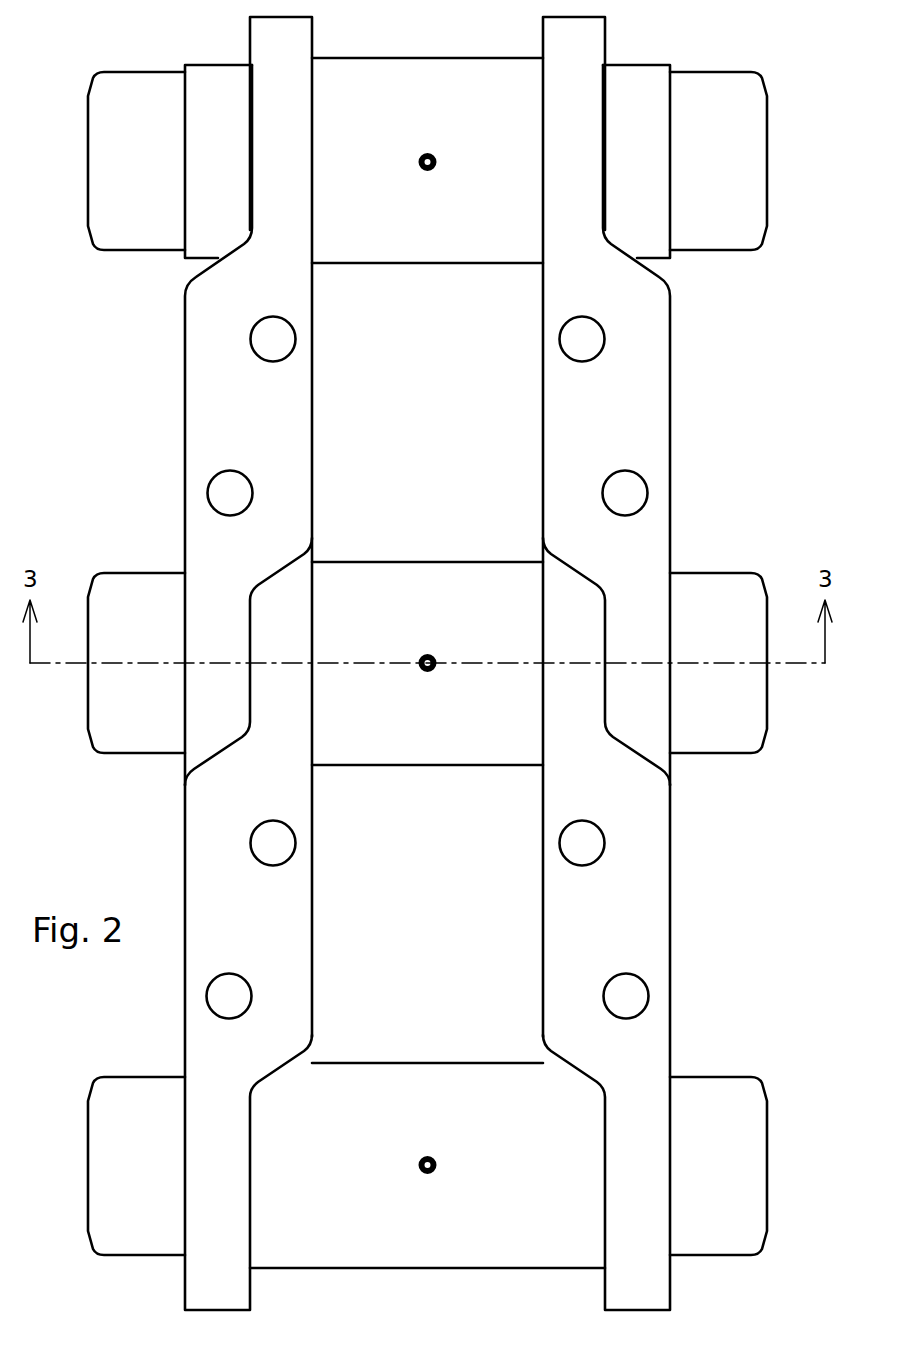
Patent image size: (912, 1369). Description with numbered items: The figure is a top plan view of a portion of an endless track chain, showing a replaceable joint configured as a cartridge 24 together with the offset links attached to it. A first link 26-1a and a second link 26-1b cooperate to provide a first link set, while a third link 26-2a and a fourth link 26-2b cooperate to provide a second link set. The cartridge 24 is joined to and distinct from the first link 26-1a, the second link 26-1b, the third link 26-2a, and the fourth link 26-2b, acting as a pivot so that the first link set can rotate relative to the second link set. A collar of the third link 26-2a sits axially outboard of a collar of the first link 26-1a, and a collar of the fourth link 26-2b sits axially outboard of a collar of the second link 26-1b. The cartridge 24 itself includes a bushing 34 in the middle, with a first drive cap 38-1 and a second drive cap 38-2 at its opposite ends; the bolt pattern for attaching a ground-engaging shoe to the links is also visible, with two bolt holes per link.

The cartridge 24 is at (747, 813).
The first link 26-1a is at (288, 921).
The second link 26-1b is at (582, 932).
The third link 26-2a is at (193, 417).
The fourth link 26-2b is at (653, 411).
The bushing 34 is at (450, 765).
The first drive cap 38-1 is at (125, 573).
The second drive cap 38-2 is at (728, 573).